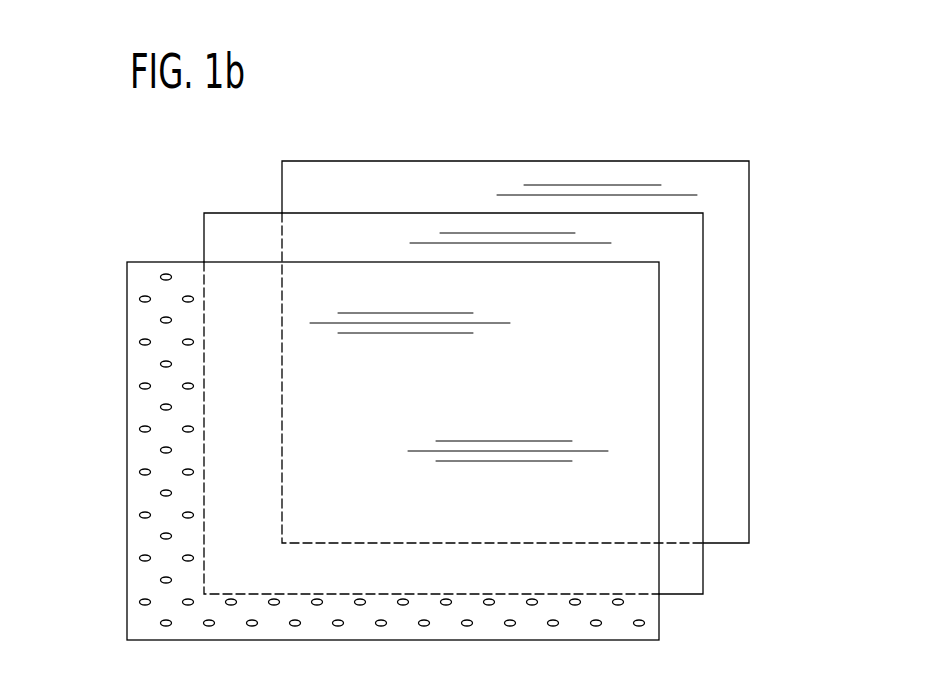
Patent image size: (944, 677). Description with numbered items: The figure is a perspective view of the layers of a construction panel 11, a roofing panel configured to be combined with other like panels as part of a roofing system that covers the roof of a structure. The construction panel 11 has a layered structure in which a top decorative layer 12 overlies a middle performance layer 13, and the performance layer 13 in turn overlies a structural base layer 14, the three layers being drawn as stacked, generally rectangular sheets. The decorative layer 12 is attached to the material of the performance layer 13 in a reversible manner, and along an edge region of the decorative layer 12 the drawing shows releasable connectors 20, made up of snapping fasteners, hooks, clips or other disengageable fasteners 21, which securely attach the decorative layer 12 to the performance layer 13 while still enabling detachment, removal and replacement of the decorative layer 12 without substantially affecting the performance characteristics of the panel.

The construction panel 11 is at (645, 133).
The decorative layer 12 is at (669, 441).
The performance layer 13 is at (711, 319).
The base layer 14 is at (756, 204).
The releasable connectors 20 is at (158, 418).
The disengageable fasteners 21 is at (140, 340).